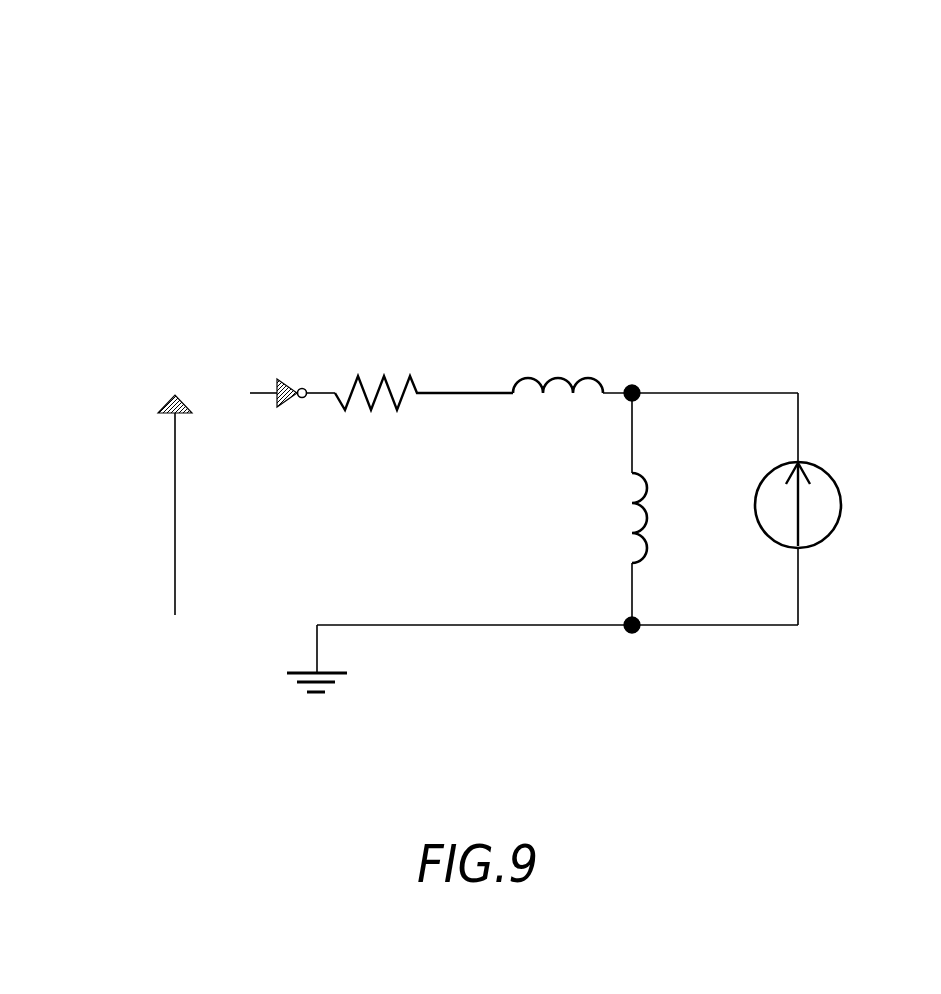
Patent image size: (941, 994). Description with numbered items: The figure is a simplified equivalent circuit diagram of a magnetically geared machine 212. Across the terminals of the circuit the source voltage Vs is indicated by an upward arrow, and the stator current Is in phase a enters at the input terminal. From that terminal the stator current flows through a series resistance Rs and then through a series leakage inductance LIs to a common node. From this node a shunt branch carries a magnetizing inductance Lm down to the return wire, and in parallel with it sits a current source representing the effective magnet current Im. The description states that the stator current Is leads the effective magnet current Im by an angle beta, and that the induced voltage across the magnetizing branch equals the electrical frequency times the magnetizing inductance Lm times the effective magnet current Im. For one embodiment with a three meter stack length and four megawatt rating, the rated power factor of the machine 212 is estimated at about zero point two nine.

The magnetically geared machine 212 is at (466, 194).
The stator current Is is at (281, 364).
The series resistance Rs is at (416, 341).
The leakage inductance LIs is at (558, 333).
The magnetizing inductance Lm is at (596, 509).
The effective magnet current Im is at (839, 509).
The source voltage Vs is at (118, 505).